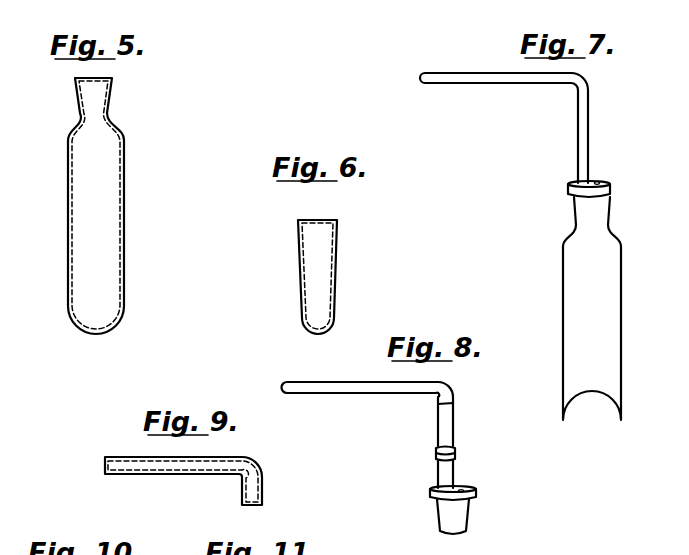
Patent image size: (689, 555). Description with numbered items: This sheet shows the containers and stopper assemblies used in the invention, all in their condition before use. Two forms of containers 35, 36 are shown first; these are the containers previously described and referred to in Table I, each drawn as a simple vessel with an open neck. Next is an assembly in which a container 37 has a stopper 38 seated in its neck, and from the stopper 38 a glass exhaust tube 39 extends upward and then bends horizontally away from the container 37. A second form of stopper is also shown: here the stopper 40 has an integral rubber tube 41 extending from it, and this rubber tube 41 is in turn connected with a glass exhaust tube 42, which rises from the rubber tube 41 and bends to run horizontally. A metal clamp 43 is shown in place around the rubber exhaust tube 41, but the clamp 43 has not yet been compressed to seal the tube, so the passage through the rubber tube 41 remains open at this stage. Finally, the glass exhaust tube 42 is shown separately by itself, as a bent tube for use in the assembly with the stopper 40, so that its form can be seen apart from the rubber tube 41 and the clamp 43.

In FIG. 5, the container 35 is at (70, 211).
In FIG. 6, the container 36 is at (307, 277).
In FIG. 7, the container 37 is at (612, 322).
In FIG. 7, the stopper 38 is at (611, 187).
In FIG. 7, the glass exhaust tube 39 is at (586, 129).
In FIG. 8, the stopper 40 is at (478, 493).
In FIG. 8, the integral rubber tube 41 is at (451, 471).
In FIG. 8, the glass exhaust tube 42 is at (381, 387).
In FIG. 9, the glass exhaust tube 42 is at (167, 476).
In FIG. 8, the metal clamp 43 is at (455, 448).